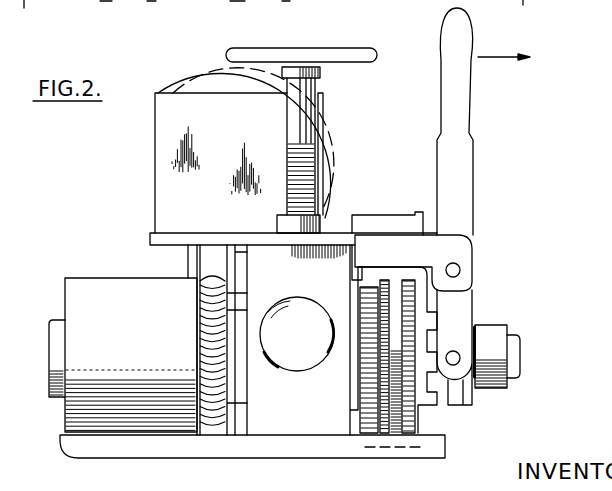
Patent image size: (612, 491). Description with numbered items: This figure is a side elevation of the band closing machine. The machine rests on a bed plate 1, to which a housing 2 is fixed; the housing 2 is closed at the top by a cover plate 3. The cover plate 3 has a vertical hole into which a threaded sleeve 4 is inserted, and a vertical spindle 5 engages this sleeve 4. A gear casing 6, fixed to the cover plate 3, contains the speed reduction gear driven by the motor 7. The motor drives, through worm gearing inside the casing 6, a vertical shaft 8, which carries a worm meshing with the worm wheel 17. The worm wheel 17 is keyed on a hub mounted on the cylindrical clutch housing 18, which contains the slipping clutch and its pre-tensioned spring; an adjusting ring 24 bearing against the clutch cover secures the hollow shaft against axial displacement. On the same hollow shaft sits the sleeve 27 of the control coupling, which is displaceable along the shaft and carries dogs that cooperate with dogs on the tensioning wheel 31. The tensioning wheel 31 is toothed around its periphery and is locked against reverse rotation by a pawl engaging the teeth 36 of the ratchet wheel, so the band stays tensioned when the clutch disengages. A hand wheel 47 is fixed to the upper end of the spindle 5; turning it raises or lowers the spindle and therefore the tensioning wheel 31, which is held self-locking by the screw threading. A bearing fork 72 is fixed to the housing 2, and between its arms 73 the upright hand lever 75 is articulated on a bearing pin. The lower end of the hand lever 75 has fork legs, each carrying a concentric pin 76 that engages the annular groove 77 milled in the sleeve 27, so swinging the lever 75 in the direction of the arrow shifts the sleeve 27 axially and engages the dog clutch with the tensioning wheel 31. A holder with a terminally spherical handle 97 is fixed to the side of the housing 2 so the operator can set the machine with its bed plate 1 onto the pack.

The bed plate 1 is at (262, 445).
The housing 2 is at (332, 431).
The cover plate 3 is at (155, 240).
The threaded sleeve 4 is at (278, 225).
The vertical spindle 5 is at (292, 157).
The gear casing 6 is at (163, 158).
The motor 7 is at (180, 69).
The vertical shaft 8 is at (196, 253).
The worm wheel 17 is at (208, 436).
The clutch housing 18 is at (70, 302).
The adjusting ring 24 is at (50, 334).
The sleeve 27 is at (504, 389).
The tensioning wheel 31 is at (394, 431).
The teeth 36 is at (369, 431).
The hand wheel 47 is at (344, 61).
The bearing fork 72 is at (431, 240).
The arms 73 is at (455, 243).
The hand lever 75 is at (453, 177).
The concentric pin 76 is at (453, 358).
The annular groove 77 is at (450, 398).
The spherical handle 97 is at (308, 314).